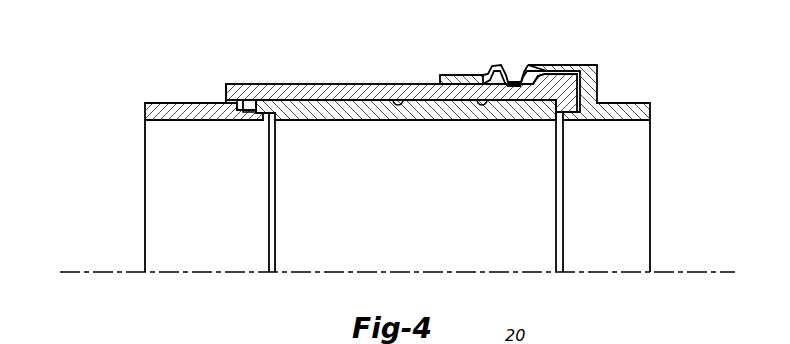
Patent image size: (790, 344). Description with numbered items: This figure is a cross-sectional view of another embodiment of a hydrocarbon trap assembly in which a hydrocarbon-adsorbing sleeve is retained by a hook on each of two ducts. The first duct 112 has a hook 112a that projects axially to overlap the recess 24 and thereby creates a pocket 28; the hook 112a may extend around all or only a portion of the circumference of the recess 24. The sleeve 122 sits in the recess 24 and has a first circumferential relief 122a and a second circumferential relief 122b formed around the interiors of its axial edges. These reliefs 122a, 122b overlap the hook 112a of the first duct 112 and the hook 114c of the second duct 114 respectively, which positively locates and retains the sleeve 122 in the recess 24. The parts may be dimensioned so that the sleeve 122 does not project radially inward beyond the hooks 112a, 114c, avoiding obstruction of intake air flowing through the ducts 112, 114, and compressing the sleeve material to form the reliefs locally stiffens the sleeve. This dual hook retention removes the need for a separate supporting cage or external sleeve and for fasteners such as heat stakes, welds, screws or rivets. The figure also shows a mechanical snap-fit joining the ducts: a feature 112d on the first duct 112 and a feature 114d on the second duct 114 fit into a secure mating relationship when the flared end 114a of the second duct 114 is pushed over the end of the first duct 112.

The first duct 112 is at (163, 103).
The hook 112a is at (262, 122).
The snap-fit feature 112d is at (539, 77).
The pocket 28 is at (240, 101).
The recess 24 is at (312, 101).
The sleeve 122 is at (387, 121).
The first circumferential relief 122a is at (254, 106).
The second circumferential relief 122b is at (556, 113).
The second duct 114 is at (631, 109).
The flared end 114a is at (457, 80).
The snap-fit feature 114d is at (521, 81).
The hook 114c is at (570, 118).